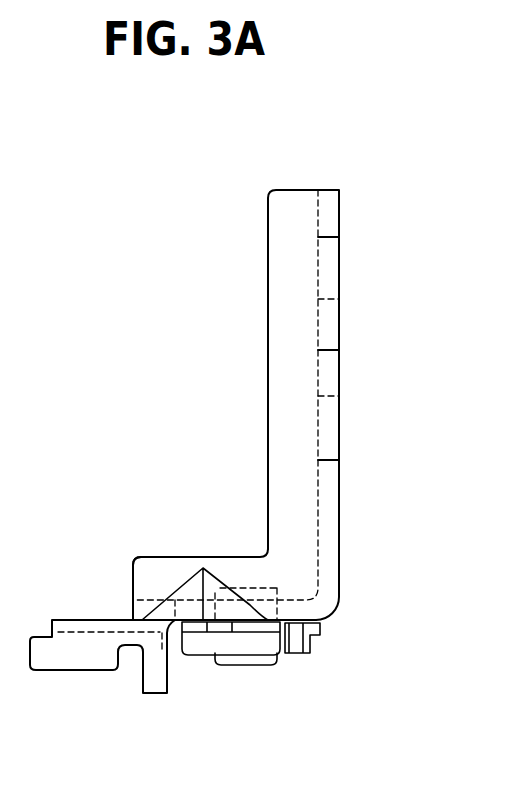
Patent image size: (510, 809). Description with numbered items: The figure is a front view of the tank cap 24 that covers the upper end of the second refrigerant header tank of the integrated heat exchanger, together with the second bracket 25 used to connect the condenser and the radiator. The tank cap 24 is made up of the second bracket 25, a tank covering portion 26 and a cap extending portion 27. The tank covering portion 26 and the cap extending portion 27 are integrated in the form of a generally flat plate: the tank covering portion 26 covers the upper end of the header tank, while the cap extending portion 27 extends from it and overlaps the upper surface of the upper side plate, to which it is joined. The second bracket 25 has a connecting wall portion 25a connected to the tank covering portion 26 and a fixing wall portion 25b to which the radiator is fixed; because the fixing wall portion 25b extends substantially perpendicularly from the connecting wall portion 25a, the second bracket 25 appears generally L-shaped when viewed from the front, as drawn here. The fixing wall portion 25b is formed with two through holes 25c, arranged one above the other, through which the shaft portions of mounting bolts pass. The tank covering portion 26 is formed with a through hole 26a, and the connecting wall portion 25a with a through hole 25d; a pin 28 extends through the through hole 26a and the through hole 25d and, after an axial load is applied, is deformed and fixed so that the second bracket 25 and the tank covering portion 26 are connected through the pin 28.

The tank cap 24 is at (248, 202).
The second bracket 25 is at (290, 208).
The connecting wall portion 25a is at (133, 608).
The fixing wall portion 25b is at (318, 350).
The through holes 25c is at (318, 237).
The through hole 25d is at (277, 600).
The tank covering portion 26 is at (200, 646).
The through hole 26a is at (277, 655).
The cap extending portion 27 is at (80, 620).
The pin 28 is at (232, 665).